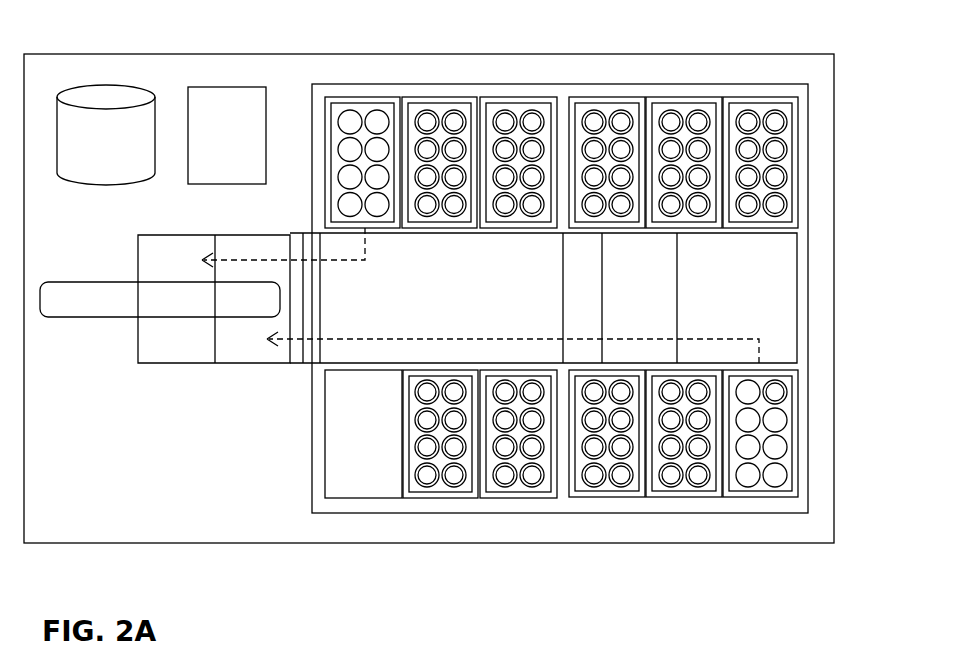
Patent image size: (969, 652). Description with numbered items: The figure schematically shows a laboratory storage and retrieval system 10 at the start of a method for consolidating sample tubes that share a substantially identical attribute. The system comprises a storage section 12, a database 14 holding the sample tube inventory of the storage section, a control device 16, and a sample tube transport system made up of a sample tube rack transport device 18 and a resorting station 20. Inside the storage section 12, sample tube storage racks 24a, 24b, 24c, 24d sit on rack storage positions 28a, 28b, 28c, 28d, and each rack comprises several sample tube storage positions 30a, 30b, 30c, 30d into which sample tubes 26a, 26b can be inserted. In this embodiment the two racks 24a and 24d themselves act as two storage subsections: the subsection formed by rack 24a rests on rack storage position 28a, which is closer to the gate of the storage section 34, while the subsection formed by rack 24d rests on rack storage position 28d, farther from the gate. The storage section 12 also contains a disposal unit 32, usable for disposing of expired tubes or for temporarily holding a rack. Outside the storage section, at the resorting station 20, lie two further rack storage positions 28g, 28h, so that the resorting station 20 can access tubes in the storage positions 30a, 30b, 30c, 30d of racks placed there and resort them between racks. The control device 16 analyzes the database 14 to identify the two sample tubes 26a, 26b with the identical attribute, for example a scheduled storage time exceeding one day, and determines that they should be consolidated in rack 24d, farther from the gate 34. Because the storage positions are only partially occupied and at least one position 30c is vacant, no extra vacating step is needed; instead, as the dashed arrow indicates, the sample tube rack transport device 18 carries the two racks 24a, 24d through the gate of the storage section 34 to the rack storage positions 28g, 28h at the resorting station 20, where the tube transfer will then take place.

The laboratory storage and retrieval system 10 is at (795, 53).
The storage section 12 is at (523, 83).
The database 14 is at (105, 140).
The control device 16 is at (227, 133).
The sample tube rack transport device 18 is at (645, 297).
The resorting station 20 is at (116, 298).
The sample tube storage rack 24a is at (332, 112).
The sample tube storage rack 24b is at (440, 110).
The sample tube storage rack 24c is at (685, 492).
The sample tube storage rack 24d is at (802, 450).
The sample tube 26a is at (289, 110).
The sample tube 26b is at (817, 354).
The rack storage position 28a is at (332, 115).
The rack storage position 28b is at (493, 117).
The rack storage position 28c is at (663, 492).
The rack storage position 28d is at (802, 450).
The rack storage position 28g is at (197, 342).
The rack storage position 28h is at (250, 332).
The sample tube storage position 30a is at (341, 113).
The sample tube storage position 30b is at (367, 113).
The sample tube storage position 30c is at (758, 403).
The sample tube storage position 30d is at (775, 392).
The disposal unit 32 is at (362, 475).
The gate of the storage section 34 is at (310, 317).